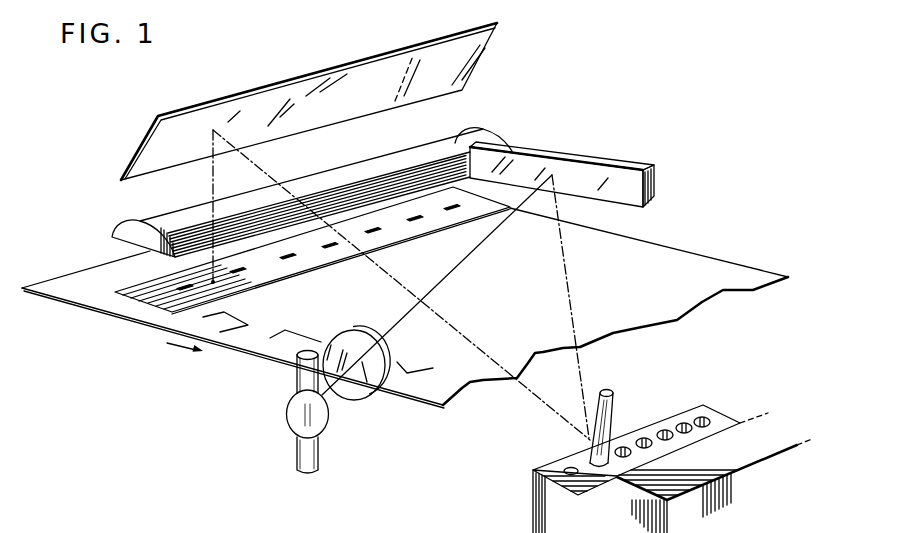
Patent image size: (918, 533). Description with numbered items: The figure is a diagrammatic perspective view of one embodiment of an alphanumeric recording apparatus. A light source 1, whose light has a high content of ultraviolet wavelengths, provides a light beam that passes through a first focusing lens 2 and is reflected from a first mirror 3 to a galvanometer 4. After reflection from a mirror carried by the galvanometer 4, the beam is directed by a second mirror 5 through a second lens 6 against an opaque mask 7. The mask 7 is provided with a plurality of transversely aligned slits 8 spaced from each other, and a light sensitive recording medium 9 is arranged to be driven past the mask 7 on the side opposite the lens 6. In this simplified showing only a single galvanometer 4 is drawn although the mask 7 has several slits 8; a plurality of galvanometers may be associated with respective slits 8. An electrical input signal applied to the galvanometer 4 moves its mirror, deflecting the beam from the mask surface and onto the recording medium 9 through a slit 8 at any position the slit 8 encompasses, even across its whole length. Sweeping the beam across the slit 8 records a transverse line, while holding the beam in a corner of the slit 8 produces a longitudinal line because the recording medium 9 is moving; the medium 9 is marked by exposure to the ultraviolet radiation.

The light source 1 is at (290, 406).
The first focusing lens 2 is at (372, 388).
The first mirror 3 is at (573, 174).
The galvanometer 4 is at (604, 416).
The second mirror 5 is at (287, 90).
The second lens 6 is at (355, 172).
The opaque mask 7 is at (317, 257).
The slits 8 is at (185, 287).
The light sensitive recording medium 9 is at (250, 338).